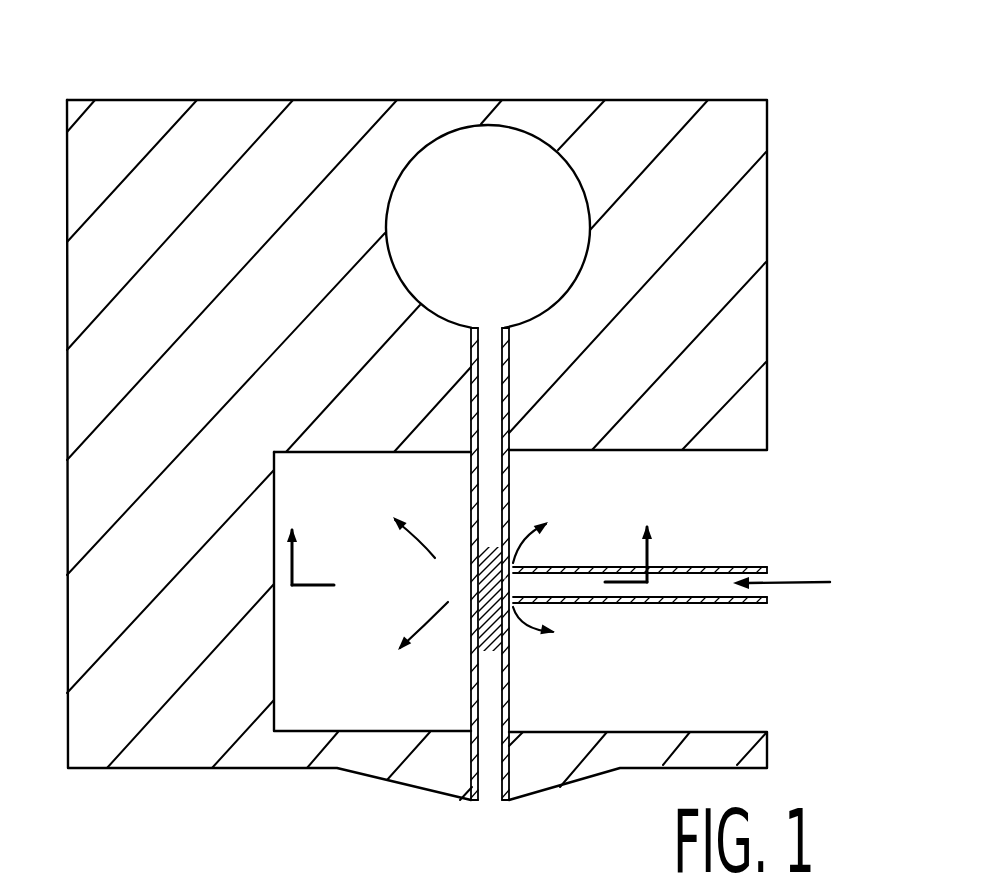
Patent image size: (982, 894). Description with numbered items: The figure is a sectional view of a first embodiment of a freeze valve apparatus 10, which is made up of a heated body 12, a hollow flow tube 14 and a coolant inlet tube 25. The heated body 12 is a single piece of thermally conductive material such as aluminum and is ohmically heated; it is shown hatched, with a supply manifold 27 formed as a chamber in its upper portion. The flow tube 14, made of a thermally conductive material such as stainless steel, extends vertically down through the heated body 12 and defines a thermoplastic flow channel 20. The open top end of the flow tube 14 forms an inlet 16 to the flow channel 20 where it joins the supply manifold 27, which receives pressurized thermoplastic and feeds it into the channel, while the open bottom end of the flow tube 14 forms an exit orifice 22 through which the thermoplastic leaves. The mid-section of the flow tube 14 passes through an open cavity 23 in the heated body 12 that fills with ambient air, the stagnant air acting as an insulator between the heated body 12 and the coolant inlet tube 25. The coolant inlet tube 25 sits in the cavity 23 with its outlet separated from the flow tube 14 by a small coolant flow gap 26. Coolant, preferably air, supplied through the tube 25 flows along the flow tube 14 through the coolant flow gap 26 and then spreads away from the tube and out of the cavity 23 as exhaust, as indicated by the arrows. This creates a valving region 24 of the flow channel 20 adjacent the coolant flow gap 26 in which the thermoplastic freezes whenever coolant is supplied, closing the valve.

The freeze valve apparatus 10 is at (772, 75).
The heated body 12 is at (165, 434).
The hollow flow tube 14 is at (508, 800).
The inlet 16 is at (493, 328).
The thermoplastic flow channel 20 is at (487, 450).
The exit orifice 22 is at (490, 793).
The cavity 23 is at (338, 496).
The valving region 24 is at (495, 547).
The coolant inlet tube 25 is at (733, 565).
The coolant flow gap 26 is at (512, 600).
The supply manifold 27 is at (455, 142).